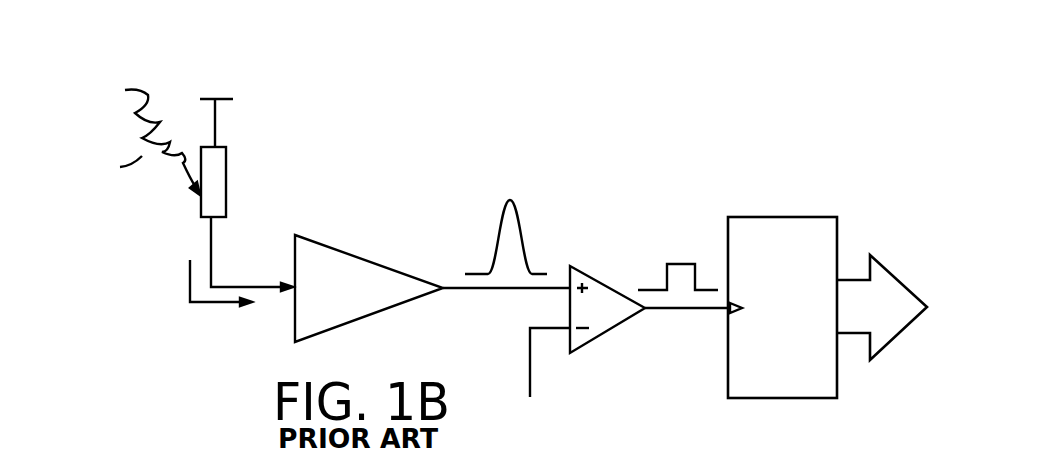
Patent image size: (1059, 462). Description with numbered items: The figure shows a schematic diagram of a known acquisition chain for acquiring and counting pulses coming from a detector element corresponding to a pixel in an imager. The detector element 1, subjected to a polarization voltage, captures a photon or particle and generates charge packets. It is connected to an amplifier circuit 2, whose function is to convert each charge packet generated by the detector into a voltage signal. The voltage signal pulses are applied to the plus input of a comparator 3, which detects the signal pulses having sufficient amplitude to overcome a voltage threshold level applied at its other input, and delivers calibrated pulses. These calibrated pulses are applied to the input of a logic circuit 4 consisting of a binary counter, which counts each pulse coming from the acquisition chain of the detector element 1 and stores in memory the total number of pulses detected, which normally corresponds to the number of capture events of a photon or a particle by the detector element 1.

The detector element 1 is at (217, 197).
The amplifier circuit 2 is at (402, 280).
The comparator 3 is at (603, 287).
The logic circuit 4 is at (782, 227).